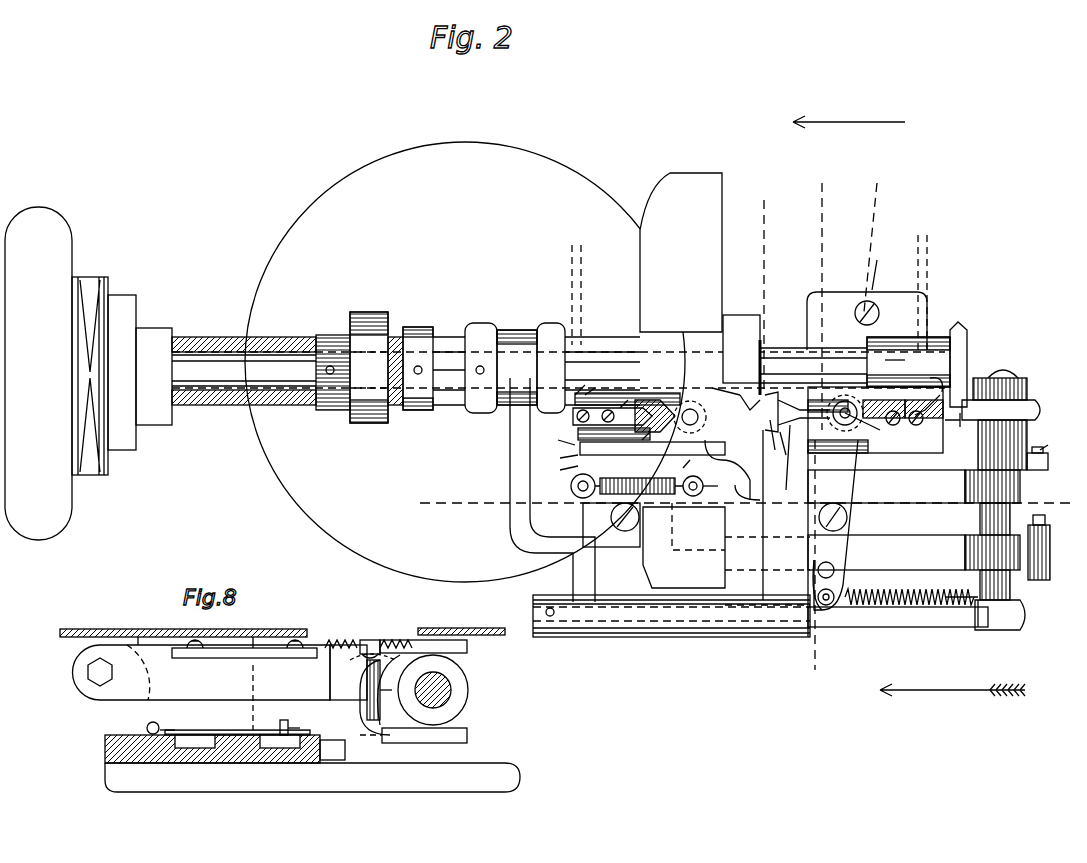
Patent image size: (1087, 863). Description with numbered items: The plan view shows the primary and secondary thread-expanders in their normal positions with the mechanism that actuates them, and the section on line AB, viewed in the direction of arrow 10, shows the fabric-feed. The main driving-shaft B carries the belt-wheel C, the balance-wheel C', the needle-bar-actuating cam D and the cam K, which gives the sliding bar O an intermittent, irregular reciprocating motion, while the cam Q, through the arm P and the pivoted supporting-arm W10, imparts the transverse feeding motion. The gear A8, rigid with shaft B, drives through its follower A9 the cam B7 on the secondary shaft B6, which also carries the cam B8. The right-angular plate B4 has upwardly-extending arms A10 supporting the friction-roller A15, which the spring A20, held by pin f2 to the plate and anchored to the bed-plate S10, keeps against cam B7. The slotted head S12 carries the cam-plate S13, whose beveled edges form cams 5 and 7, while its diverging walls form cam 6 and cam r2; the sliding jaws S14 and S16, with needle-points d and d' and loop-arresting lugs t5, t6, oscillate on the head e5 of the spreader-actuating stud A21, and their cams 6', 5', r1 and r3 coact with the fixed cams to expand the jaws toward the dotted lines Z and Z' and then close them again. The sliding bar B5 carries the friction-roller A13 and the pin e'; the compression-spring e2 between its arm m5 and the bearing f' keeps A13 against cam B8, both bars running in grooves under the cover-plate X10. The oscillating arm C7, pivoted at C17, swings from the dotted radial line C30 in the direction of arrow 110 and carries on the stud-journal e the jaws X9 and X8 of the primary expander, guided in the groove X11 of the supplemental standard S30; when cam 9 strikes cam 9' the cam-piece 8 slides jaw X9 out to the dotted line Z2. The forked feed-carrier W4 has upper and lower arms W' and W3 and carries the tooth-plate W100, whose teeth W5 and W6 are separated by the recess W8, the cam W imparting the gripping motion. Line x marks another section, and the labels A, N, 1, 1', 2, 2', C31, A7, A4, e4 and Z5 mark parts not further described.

In FIG. 2, the frame A is at (465, 362).
In FIG. 2, the main driving-shaft B is at (265, 345).
In FIG. 2, the balance-wheel C' is at (38, 373).
In FIG. 2, the belt-wheel C is at (96, 382).
In FIG. 2, the needle-bar-actuating cam D is at (138, 443).
In FIG. 2, the cam K is at (376, 424).
In FIG. 2, the sliding bar O is at (394, 406).
In FIG. 2, the collar N is at (420, 412).
In FIG. 2, the cam Q is at (482, 414).
In FIG. 2, the arm P is at (510, 330).
In FIG. 2, the line 1 is at (568, 286).
In FIG. 2, the line 1' is at (584, 286).
In FIG. 2, the upper arm of feed-carrier W' is at (708, 252).
In FIG. 8, the upper arm of feed-carrier W' is at (444, 649).
In FIG. 2, the cam W is at (757, 355).
In FIG. 8, the cam W is at (432, 695).
In FIG. 2, the section line AB is at (787, 431).
In FIG. 2, the line C31 is at (820, 297).
In FIG. 2, the dotted radial line C30 is at (867, 257).
In FIG. 2, the supplemental standard S30 is at (881, 262).
In FIG. 2, the line 2 is at (913, 283).
In FIG. 2, the line 2' is at (927, 283).
In FIG. 2, the cam 9' is at (939, 341).
In FIG. 2, the cam 9 is at (944, 342).
In FIG. 2, the bearing A7 is at (890, 340).
In FIG. 2, the jaw X9 is at (894, 361).
In FIG. 2, the gear A8 is at (962, 330).
In FIG. 2, the box or bearing f' is at (1011, 368).
In FIG. 2, the follower A9 is at (1040, 405).
In FIG. 2, the cam B7 is at (996, 461).
In FIG. 2, the cam B8 is at (992, 551).
In FIG. 2, the friction-roller A15 is at (1048, 460).
In FIG. 2, the upwardly-extending arms A10 is at (1060, 438).
In FIG. 2, the friction-roller A13 is at (1050, 548).
In FIG. 2, the section line x is at (747, 512).
In FIG. 2, the rectilinear-moving plate B4 is at (886, 486).
In FIG. 2, the sliding bar B5 is at (886, 543).
In FIG. 2, the secondary shaft B6 is at (1000, 632).
In FIG. 2, the frame A4 is at (978, 630).
In FIG. 2, the oscillating arm C7 is at (850, 485).
In FIG. 2, the pivot C17 is at (848, 517).
In FIG. 2, the pin e' is at (848, 561).
In FIG. 2, the compression-spring e2 is at (888, 592).
In FIG. 8, the compression-spring e2 is at (166, 730).
In FIG. 2, the pin e4 is at (840, 605).
In FIG. 8, the pin e4 is at (146, 726).
In FIG. 2, the laterally-extending arm m5 is at (826, 605).
In FIG. 2, the arrow 10 is at (952, 683).
In FIG. 2, the arrow 110 is at (849, 112).
In FIG. 2, the jaw X8 is at (875, 420).
In FIG. 2, the cam 8 is at (952, 427).
In FIG. 2, the stud-journal e is at (869, 432).
In FIG. 2, the groove X11 is at (838, 425).
In FIG. 2, the dotted line Z is at (804, 381).
In FIG. 2, the dotted radial line Z2 is at (778, 395).
In FIG. 2, the jaw Z5 is at (783, 437).
In FIG. 2, the dotted line Z' is at (782, 462).
In FIG. 2, the needle-point d is at (772, 445).
In FIG. 8, the needle-point d is at (370, 627).
In FIG. 2, the needle-pointed portion d' is at (744, 387).
In FIG. 8, the needle-pointed portion d' is at (378, 628).
In FIG. 2, the loop-arrester lug t6 is at (715, 388).
In FIG. 2, the loop-arrester lug t5 is at (732, 466).
In FIG. 2, the cam-plate S13 is at (575, 410).
In FIG. 2, the sliding jaw S14 is at (614, 429).
In FIG. 2, the sliding jaw S16 is at (648, 400).
In FIG. 2, the head e5 is at (690, 408).
In FIG. 2, the cam 7 is at (652, 455).
In FIG. 2, the cam 6' is at (590, 355).
In FIG. 2, the cam 6 is at (598, 372).
In FIG. 2, the cam 5' is at (620, 362).
In FIG. 2, the cam 5 is at (655, 376).
In FIG. 2, the cam r3 is at (578, 482).
In FIG. 2, the cam r2 is at (556, 458).
In FIG. 2, the cam r1 is at (562, 472).
In FIG. 2, the spring A20 is at (637, 478).
In FIG. 8, the spring A20 is at (281, 718).
In FIG. 2, the pin f2 is at (714, 488).
In FIG. 8, the pin f2 is at (300, 727).
In FIG. 2, the slotted head S12 is at (690, 457).
In FIG. 2, the bed-plate S10 is at (598, 525).
In FIG. 2, the pivoted supporting-arm W10 is at (720, 640).
In FIG. 8, the tooth-plate W100 is at (240, 648).
In FIG. 8, the forked feed-carrier W4 is at (227, 687).
In FIG. 8, the tooth W6 is at (330, 638).
In FIG. 8, the recessed portion W8 is at (365, 640).
In FIG. 8, the tooth W5 is at (410, 632).
In FIG. 8, the lower arm of feed-carrier W3 is at (470, 740).
In FIG. 8, the retaining cover-plate X10 is at (225, 736).
In FIG. 8, the spreader-actuating stud A21 is at (391, 700).